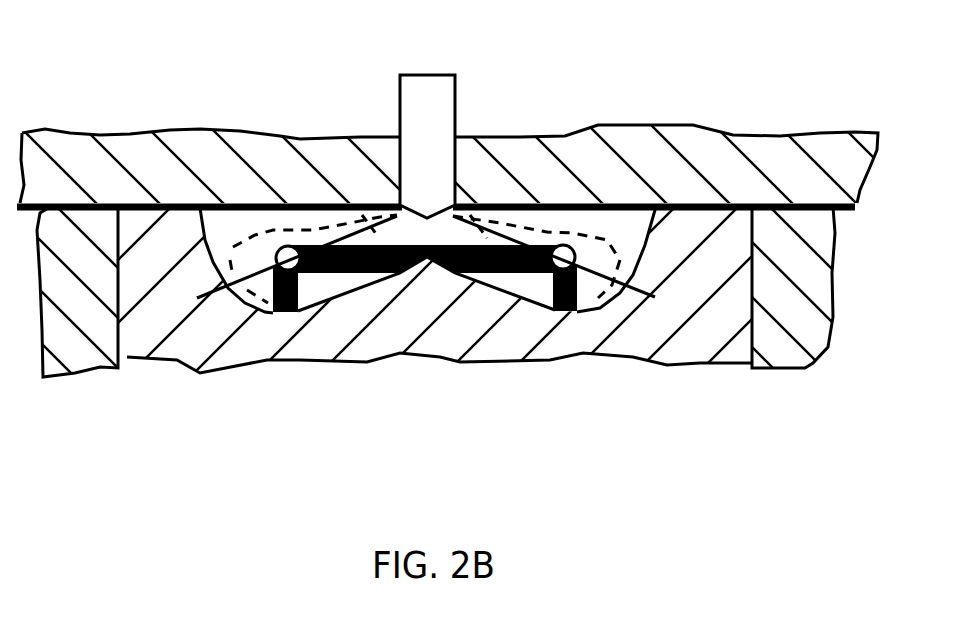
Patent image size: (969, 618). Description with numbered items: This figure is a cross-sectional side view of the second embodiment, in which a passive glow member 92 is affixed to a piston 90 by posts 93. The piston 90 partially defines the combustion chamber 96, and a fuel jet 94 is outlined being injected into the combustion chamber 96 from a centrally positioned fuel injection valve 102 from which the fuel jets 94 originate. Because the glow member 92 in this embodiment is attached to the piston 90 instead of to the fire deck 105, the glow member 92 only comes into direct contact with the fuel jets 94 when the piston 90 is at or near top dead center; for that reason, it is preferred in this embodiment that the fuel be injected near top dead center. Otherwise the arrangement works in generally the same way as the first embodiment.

The piston 90 is at (207, 338).
The passive glow member 92 is at (247, 137).
The posts 93 is at (548, 312).
The fuel jet 94 is at (795, 250).
The combustion chamber 96 is at (397, 218).
The fuel injection valve 102 is at (430, 163).
The fire deck 105 is at (600, 238).